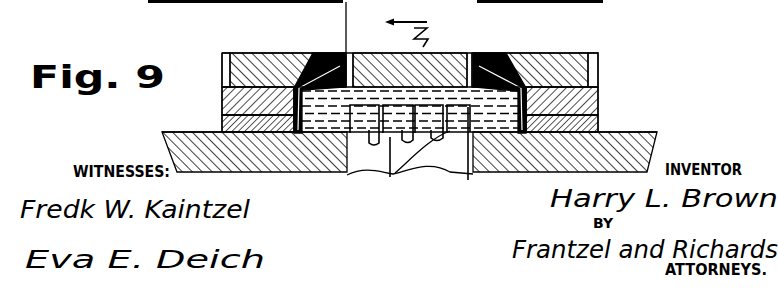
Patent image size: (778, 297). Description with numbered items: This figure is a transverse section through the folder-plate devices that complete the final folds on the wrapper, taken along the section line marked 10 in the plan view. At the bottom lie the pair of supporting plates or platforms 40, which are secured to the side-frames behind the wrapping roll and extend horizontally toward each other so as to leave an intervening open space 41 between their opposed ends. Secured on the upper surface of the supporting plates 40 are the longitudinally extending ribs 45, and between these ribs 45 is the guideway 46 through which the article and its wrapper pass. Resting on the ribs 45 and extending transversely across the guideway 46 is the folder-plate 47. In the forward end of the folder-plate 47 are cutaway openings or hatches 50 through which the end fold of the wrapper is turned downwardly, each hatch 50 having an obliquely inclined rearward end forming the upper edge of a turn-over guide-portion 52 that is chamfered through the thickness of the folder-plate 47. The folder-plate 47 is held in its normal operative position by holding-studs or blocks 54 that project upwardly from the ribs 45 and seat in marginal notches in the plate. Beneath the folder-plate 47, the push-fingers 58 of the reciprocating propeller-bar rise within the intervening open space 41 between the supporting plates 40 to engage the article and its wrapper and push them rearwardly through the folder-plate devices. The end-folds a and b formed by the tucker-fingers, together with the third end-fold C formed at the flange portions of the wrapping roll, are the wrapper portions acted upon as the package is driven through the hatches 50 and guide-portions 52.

The center line of assembly 10 is at (360, 27).
The supporting plates or platforms 40 is at (532, 187).
The intervening open space 41 is at (330, 199).
The ribs 45 is at (222, 97).
The guideway 46 is at (222, 117).
The folder-plate 47 is at (260, 41).
The openings or hatches 50 is at (349, 82).
The turn-over guide-portion 52 is at (334, 54).
The holding-studs or blocks 54 is at (222, 67).
The push-fingers 58 is at (391, 138).
The end-fold a is at (290, 173).
The end-fold b is at (598, 86).
The end-fold C is at (551, 53).